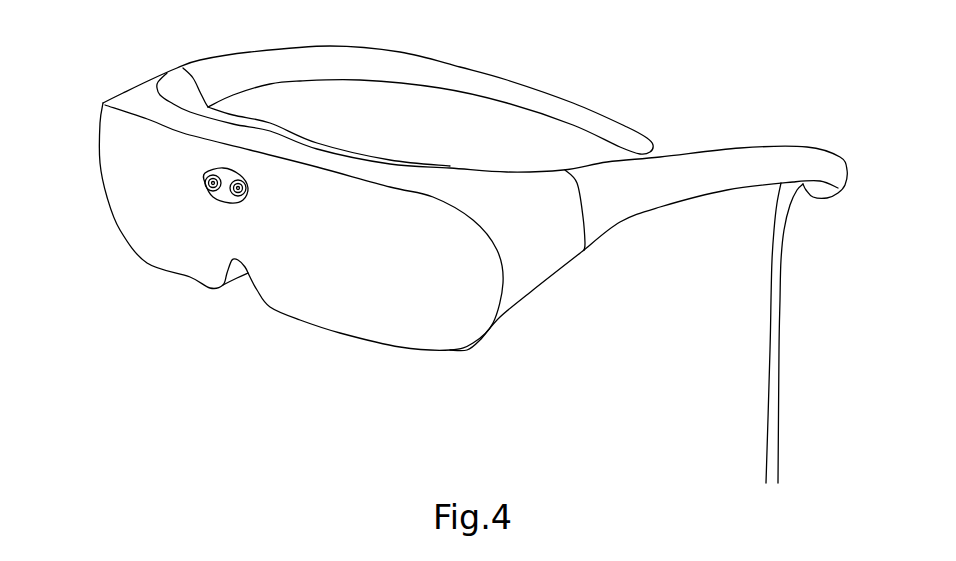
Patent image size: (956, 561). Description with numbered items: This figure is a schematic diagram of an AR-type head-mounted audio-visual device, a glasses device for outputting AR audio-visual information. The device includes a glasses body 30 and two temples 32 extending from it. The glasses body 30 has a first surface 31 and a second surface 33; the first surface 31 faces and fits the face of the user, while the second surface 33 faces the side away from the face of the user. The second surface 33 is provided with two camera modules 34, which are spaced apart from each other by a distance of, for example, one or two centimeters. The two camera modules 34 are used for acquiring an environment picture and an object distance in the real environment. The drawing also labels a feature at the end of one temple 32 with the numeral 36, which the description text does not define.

The glasses body 30 is at (474, 251).
The first surface 31 is at (430, 162).
The temple 32 is at (373, 53).
The second surface 33 is at (377, 260).
The camera module 34 is at (220, 173).
The temple tip with cable 36 is at (847, 170).